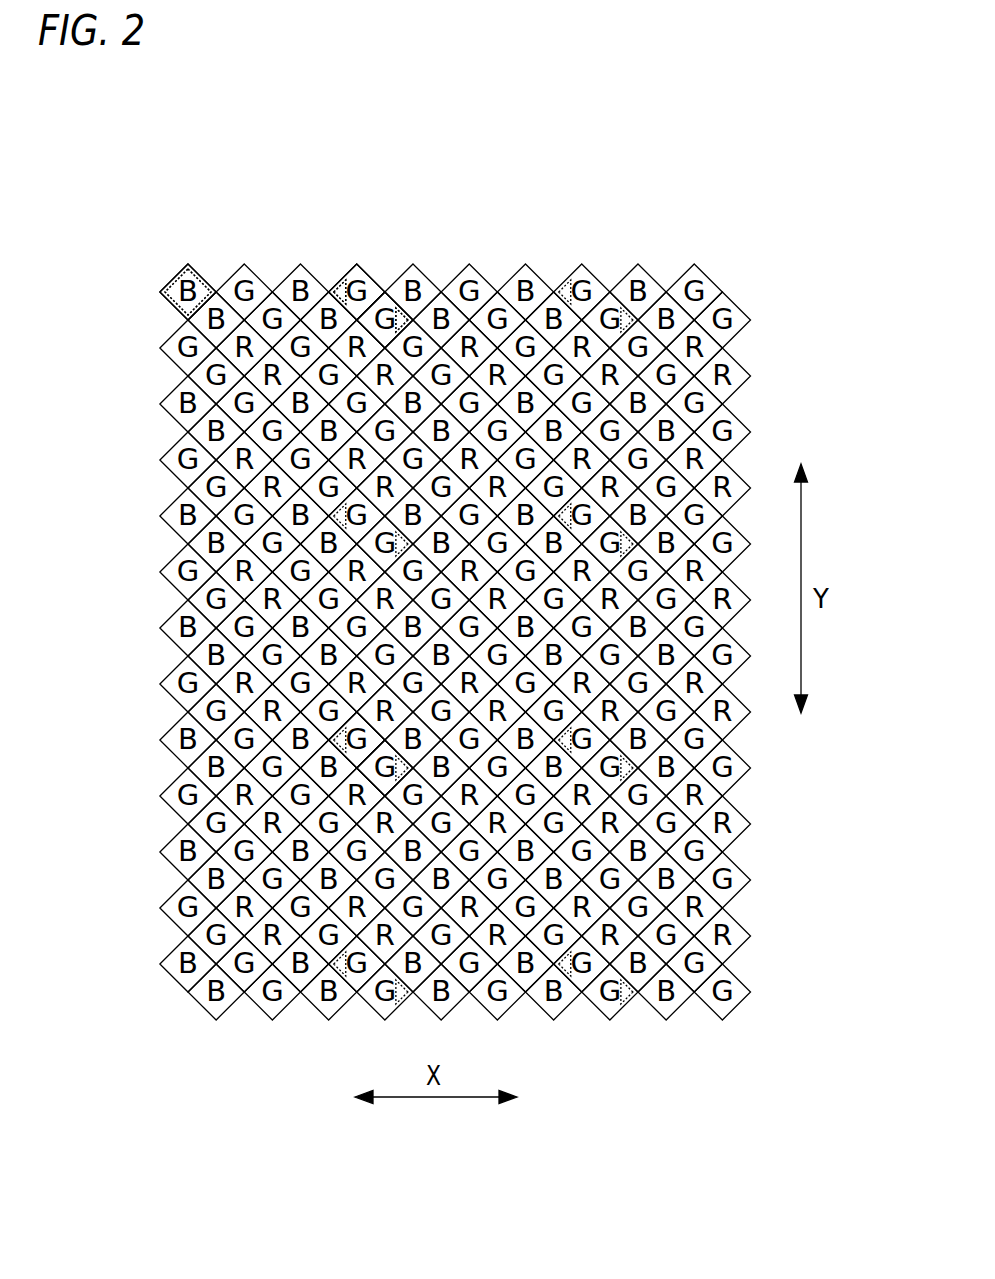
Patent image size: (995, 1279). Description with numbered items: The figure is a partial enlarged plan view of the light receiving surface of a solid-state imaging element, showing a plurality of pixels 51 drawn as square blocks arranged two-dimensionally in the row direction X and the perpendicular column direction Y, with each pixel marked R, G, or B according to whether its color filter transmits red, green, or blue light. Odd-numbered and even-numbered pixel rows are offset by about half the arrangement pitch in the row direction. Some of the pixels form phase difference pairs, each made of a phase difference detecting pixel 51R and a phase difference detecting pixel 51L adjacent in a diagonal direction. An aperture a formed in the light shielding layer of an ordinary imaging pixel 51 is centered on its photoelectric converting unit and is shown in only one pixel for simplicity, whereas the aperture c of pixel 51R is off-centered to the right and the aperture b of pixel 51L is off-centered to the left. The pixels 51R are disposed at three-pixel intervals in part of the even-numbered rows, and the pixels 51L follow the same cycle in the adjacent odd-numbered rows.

The pixel 51 is at (189, 264).
The phase difference detecting pixel 51L is at (358, 266).
The phase difference detecting pixel 51R is at (386, 290).
The aperture a is at (173, 278).
The aperture b is at (338, 282).
The aperture c is at (408, 310).